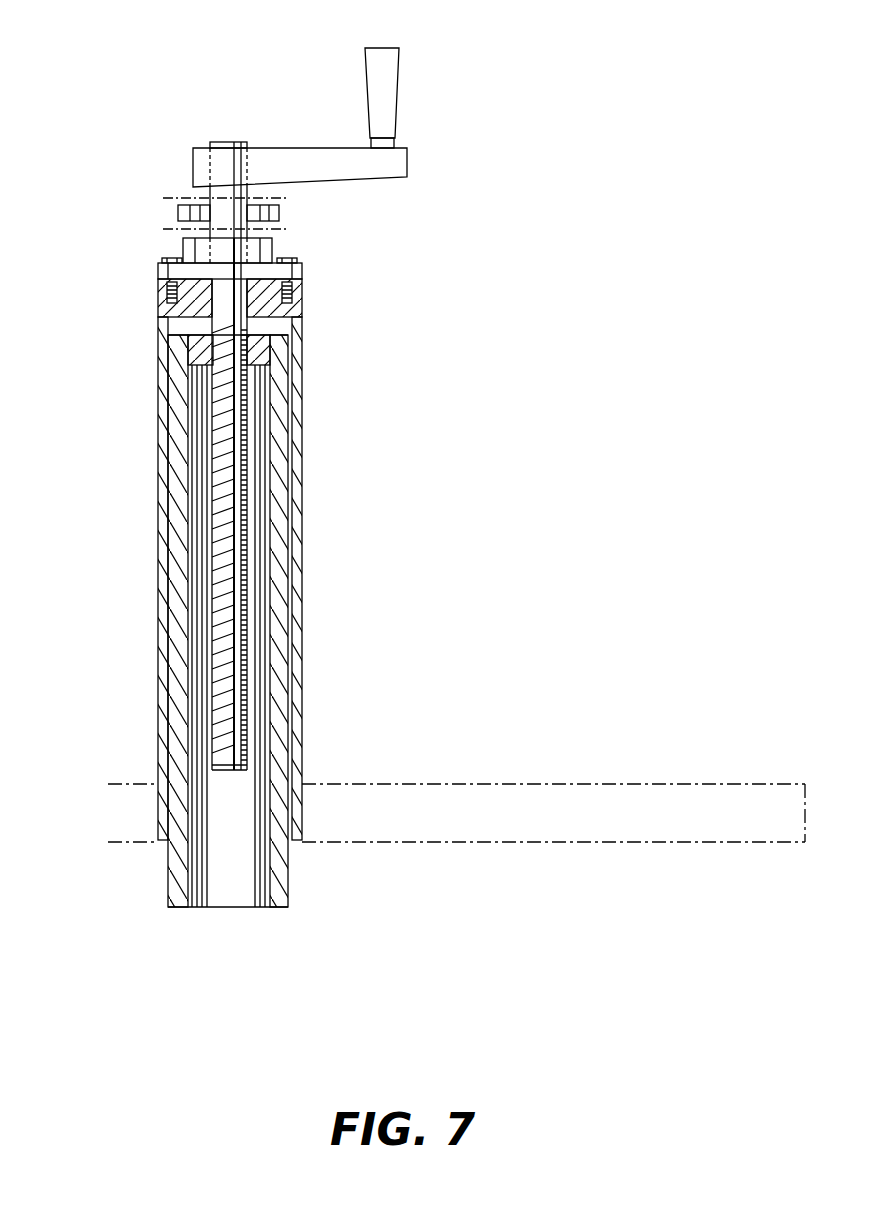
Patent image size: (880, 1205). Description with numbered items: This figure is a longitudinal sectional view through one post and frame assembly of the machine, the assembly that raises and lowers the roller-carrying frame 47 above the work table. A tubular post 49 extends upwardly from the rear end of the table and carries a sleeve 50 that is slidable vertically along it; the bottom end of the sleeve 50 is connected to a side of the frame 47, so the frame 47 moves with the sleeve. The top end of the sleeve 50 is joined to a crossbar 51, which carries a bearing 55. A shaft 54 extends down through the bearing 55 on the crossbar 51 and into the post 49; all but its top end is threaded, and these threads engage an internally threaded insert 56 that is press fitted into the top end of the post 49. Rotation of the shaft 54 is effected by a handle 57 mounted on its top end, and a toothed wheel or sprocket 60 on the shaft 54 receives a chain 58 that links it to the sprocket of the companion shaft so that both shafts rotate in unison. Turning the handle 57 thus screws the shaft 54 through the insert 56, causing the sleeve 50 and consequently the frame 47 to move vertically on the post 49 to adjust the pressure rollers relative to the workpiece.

The frame 47 is at (445, 820).
The tubular post 49 is at (176, 740).
The sleeve 50 is at (162, 540).
The crossbar 51 is at (160, 306).
The shaft 54 is at (248, 520).
The bearing 55 is at (263, 250).
The internally threaded insert 56 is at (257, 353).
The handle 57 is at (392, 80).
The chain 58 is at (163, 196).
The sprocket 60 is at (273, 210).